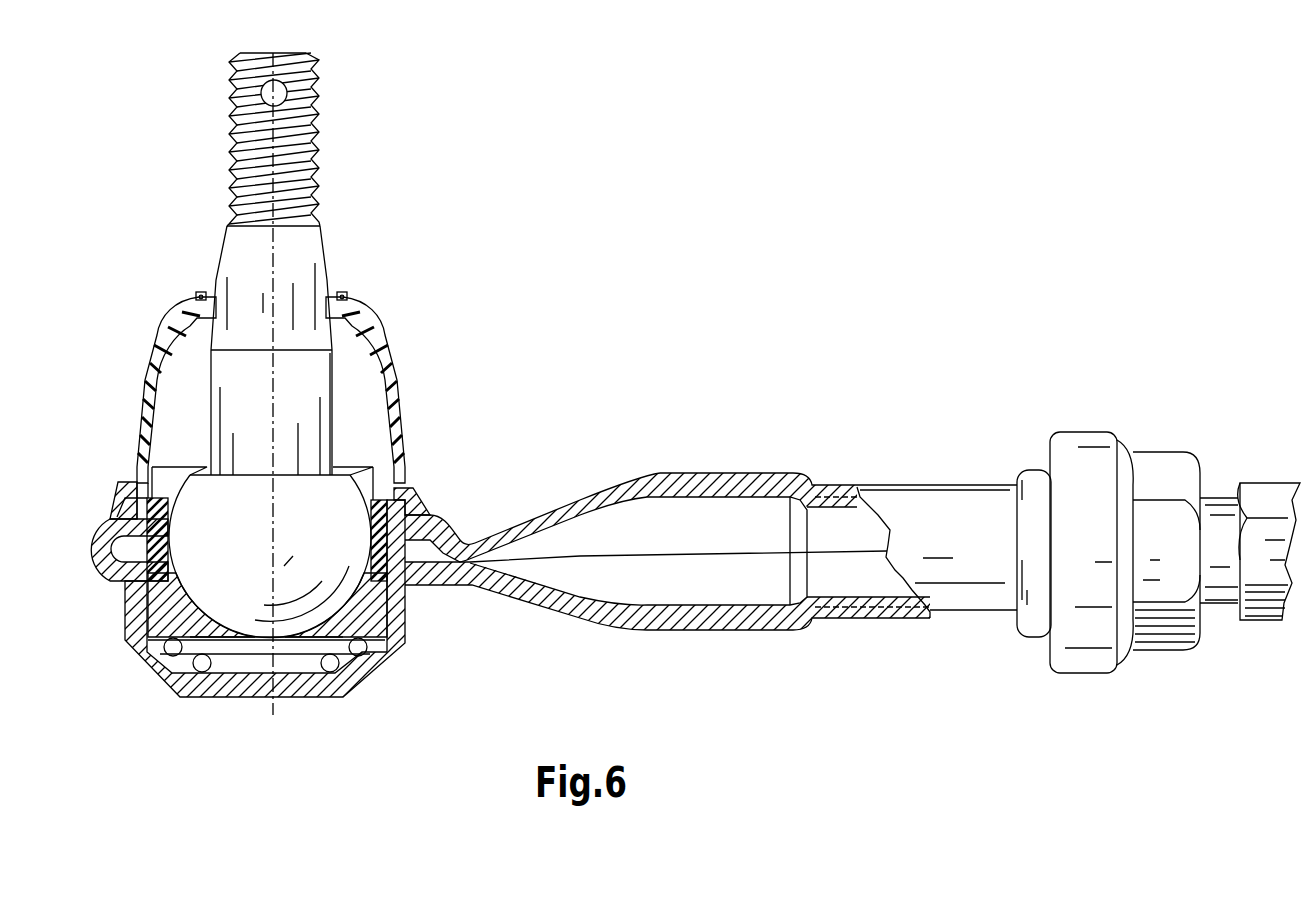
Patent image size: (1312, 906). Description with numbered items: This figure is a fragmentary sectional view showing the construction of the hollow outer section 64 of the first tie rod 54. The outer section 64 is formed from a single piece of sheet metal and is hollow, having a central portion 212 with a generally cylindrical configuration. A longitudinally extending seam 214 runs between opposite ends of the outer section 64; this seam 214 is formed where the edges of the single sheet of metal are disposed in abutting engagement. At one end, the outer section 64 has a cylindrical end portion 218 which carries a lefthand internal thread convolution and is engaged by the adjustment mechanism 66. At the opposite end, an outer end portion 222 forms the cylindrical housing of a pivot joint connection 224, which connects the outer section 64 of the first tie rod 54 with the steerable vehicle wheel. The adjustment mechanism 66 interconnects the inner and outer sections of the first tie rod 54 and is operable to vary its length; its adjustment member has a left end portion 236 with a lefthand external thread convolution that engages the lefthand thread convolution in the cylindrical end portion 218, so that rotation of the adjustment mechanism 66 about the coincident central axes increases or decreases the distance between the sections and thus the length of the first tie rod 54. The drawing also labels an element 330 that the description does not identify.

The first tie rod 54 is at (887, 337).
The hollow outer section 64 is at (791, 454).
The adjustment mechanism 66 is at (1197, 346).
The central portion 212 is at (716, 452).
The longitudinally extending seam 214 is at (623, 550).
The cylindrical end portion 218 is at (935, 512).
The outer end portion 222 is at (311, 720).
The pivot joint connection 224 is at (392, 277).
The left end portion 236 is at (1216, 587).
The nut 330 is at (1265, 494).